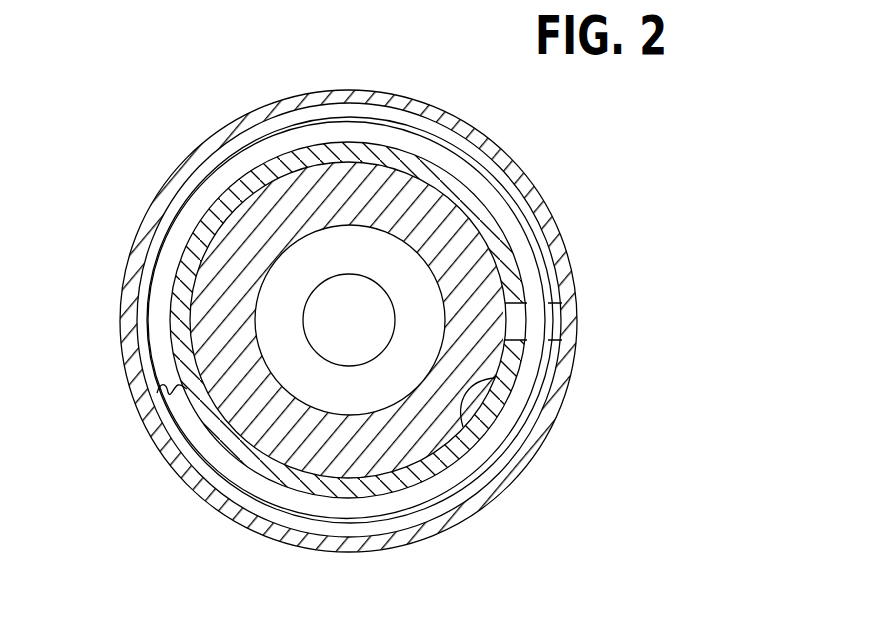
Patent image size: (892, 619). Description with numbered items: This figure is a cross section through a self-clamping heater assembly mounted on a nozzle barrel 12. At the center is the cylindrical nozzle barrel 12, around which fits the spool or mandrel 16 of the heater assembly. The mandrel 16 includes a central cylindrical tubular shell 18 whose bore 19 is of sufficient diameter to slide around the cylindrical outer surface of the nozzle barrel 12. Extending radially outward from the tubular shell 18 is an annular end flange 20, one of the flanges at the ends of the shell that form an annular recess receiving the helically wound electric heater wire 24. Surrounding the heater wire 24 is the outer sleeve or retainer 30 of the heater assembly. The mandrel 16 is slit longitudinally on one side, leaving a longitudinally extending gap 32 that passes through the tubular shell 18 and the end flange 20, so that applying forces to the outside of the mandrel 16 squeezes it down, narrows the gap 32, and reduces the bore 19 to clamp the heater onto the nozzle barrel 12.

The nozzle barrel 12 is at (433, 195).
The spool or mandrel 16 is at (253, 167).
The central cylindrical tubular shell 18 is at (483, 430).
The bore 19 is at (495, 378).
The radially extending end flange 20 is at (520, 198).
The helically wound electric heater wire 24 is at (192, 430).
The outer sleeve or retainer 30 is at (385, 90).
The longitudinally extending gap 32 is at (522, 323).